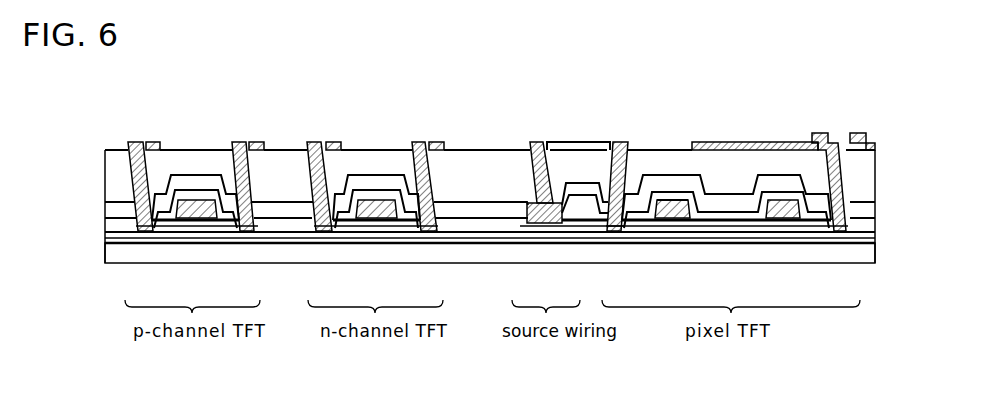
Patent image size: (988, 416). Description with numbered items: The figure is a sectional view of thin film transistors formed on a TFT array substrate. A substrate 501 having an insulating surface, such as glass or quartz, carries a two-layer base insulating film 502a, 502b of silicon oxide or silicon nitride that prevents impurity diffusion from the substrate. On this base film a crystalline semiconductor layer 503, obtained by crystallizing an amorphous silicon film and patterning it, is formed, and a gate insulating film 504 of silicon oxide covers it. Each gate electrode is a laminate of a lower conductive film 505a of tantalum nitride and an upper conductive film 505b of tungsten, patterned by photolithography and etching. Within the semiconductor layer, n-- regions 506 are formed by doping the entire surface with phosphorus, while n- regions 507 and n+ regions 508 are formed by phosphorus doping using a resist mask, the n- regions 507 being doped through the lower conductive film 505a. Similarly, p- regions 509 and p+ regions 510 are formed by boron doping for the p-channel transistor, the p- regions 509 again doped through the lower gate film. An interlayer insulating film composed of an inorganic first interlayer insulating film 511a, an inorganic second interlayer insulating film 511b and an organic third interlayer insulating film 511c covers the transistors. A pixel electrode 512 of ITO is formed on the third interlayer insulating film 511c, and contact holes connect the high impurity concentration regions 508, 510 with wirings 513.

The substrate 501 is at (108, 258).
The base insulating film 502a is at (103, 240).
The base insulating film 502b is at (105, 235).
The semiconductor layer 503 is at (673, 233).
The gate insulating film 504 is at (793, 232).
The conductive film 505a is at (702, 202).
The conductive film 505b is at (675, 205).
The n-- region 506 is at (747, 240).
The n- region 507 is at (398, 242).
The n+ region 508 is at (434, 242).
The p- region 509 is at (217, 240).
The p+ region 510 is at (257, 243).
The first interlayer insulating film 511a is at (387, 192).
The second interlayer insulating film 511b is at (355, 180).
The third interlayer insulating film 511c is at (172, 163).
The pixel electrode 512 is at (722, 140).
The wiring 513 is at (530, 141).